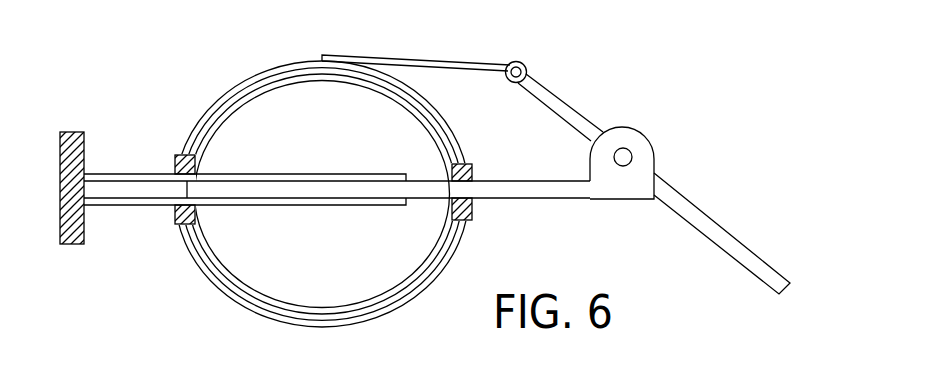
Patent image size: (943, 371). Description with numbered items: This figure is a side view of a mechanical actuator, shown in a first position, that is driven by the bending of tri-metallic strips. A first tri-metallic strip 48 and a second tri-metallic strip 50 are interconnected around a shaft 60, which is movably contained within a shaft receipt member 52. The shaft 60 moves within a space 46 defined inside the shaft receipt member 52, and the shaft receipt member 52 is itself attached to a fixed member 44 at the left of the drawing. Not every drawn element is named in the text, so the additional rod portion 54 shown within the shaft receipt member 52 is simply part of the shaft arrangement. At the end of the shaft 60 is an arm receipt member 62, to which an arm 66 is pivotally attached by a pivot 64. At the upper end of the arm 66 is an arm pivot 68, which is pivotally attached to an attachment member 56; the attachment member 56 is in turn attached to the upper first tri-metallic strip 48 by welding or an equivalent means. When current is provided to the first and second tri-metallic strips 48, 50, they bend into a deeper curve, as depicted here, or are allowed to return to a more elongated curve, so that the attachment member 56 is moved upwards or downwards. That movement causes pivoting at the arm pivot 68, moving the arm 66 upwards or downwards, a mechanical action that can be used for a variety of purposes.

The fixed member 44 is at (63, 141).
The space 46 is at (148, 187).
The first tri-metallic strip 48 is at (232, 87).
The second tri-metallic strip 50 is at (199, 262).
The shaft receipt member 52 is at (357, 173).
The rod 54 is at (275, 187).
The attachment member 56 is at (443, 57).
The shaft 60 is at (551, 200).
The arm receipt member 62 is at (654, 157).
The pivot 64 is at (617, 147).
The arm 66 is at (763, 258).
The arm pivot 68 is at (513, 61).